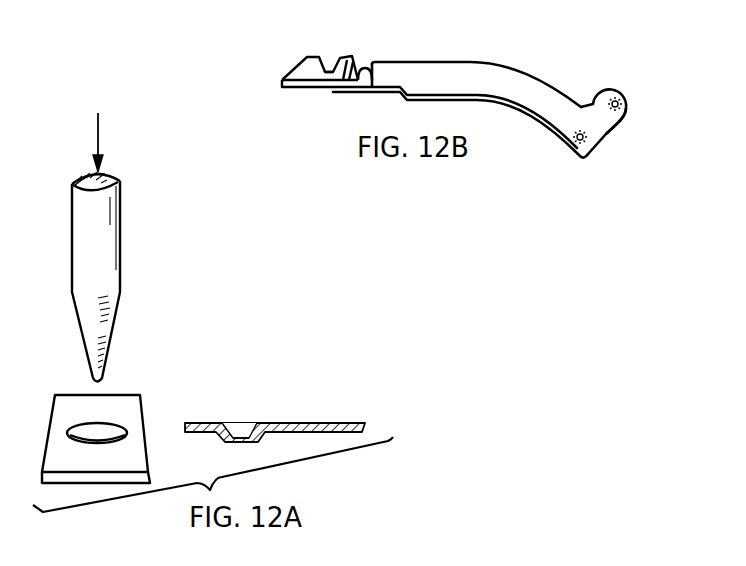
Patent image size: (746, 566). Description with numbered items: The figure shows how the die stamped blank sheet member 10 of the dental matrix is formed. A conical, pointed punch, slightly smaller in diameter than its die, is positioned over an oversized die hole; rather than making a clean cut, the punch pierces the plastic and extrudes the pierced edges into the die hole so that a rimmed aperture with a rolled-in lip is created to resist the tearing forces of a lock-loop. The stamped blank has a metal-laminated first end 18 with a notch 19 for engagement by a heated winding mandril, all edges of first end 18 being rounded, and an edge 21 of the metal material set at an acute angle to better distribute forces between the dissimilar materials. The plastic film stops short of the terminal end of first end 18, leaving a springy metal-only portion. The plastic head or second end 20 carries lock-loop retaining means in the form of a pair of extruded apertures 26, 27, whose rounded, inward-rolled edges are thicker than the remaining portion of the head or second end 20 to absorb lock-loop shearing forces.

In FIG. 12B, the blank sheet member 10 is at (450, 56).
In FIG. 12B, the first end 18 is at (310, 70).
In FIG. 12B, the notch 19 is at (333, 70).
In FIG. 12B, the edge 21 is at (366, 64).
In FIG. 12B, the head or second end 20 is at (609, 91).
In FIG. 12A, the head or second end 20 is at (208, 423).
In FIG. 12B, the extruded aperture 27 is at (629, 116).
In FIG. 12A, the extruded aperture 27 is at (248, 423).
In FIG. 12B, the extruded aperture 26 is at (584, 144).